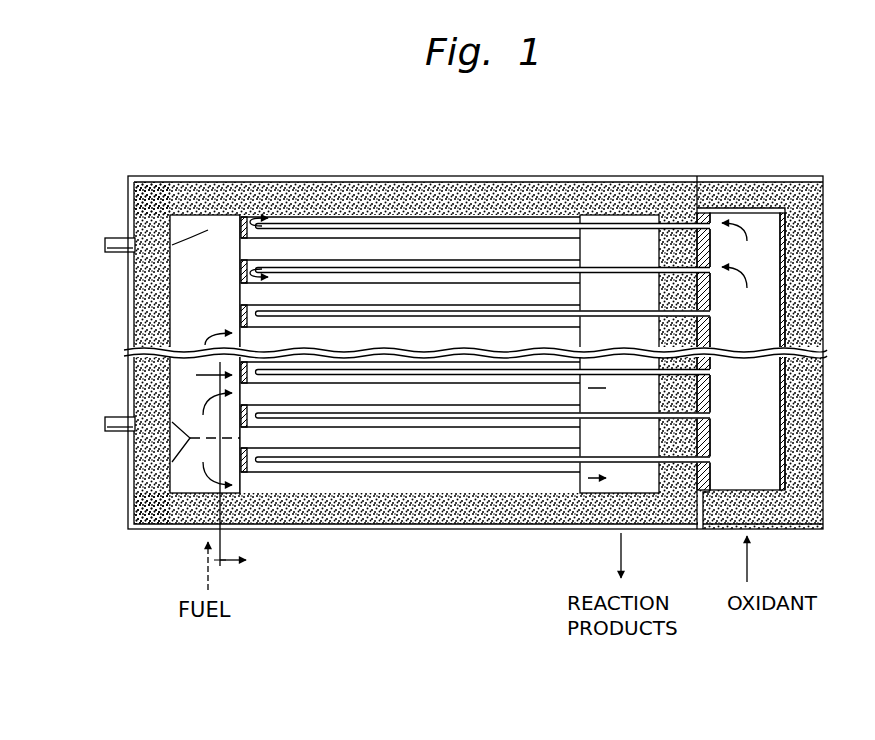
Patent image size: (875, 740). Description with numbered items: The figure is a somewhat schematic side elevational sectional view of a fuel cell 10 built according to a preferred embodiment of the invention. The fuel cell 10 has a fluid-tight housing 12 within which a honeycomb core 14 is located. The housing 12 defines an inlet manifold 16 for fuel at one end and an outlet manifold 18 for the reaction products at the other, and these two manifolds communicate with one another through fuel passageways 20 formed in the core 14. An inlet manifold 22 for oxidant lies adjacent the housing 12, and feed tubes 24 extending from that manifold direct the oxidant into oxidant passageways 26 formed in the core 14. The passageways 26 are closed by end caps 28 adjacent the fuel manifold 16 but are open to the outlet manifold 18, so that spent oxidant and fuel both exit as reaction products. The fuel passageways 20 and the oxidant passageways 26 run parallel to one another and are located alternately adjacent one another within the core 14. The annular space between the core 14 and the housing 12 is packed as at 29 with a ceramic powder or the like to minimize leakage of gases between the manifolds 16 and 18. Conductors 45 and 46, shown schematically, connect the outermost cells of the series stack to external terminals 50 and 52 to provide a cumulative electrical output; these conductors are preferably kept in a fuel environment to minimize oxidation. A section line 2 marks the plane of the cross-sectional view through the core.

The section line 2 is at (223, 467).
The fuel cell 10 is at (316, 566).
The housing 12 is at (473, 531).
The honeycomb core 14 is at (351, 212).
The inlet manifold 16 is at (187, 313).
The outlet manifold 18 is at (606, 216).
The fuel passageways 20 is at (476, 290).
The inlet manifold 22 is at (746, 392).
The feed tubes 24 is at (632, 265).
The passageways 26 is at (314, 260).
The end caps 28 is at (240, 306).
The packing 29 is at (438, 195).
The conductor 45 is at (172, 462).
The conductor 46 is at (208, 230).
The external terminal 50 is at (105, 420).
The external terminal 52 is at (105, 238).